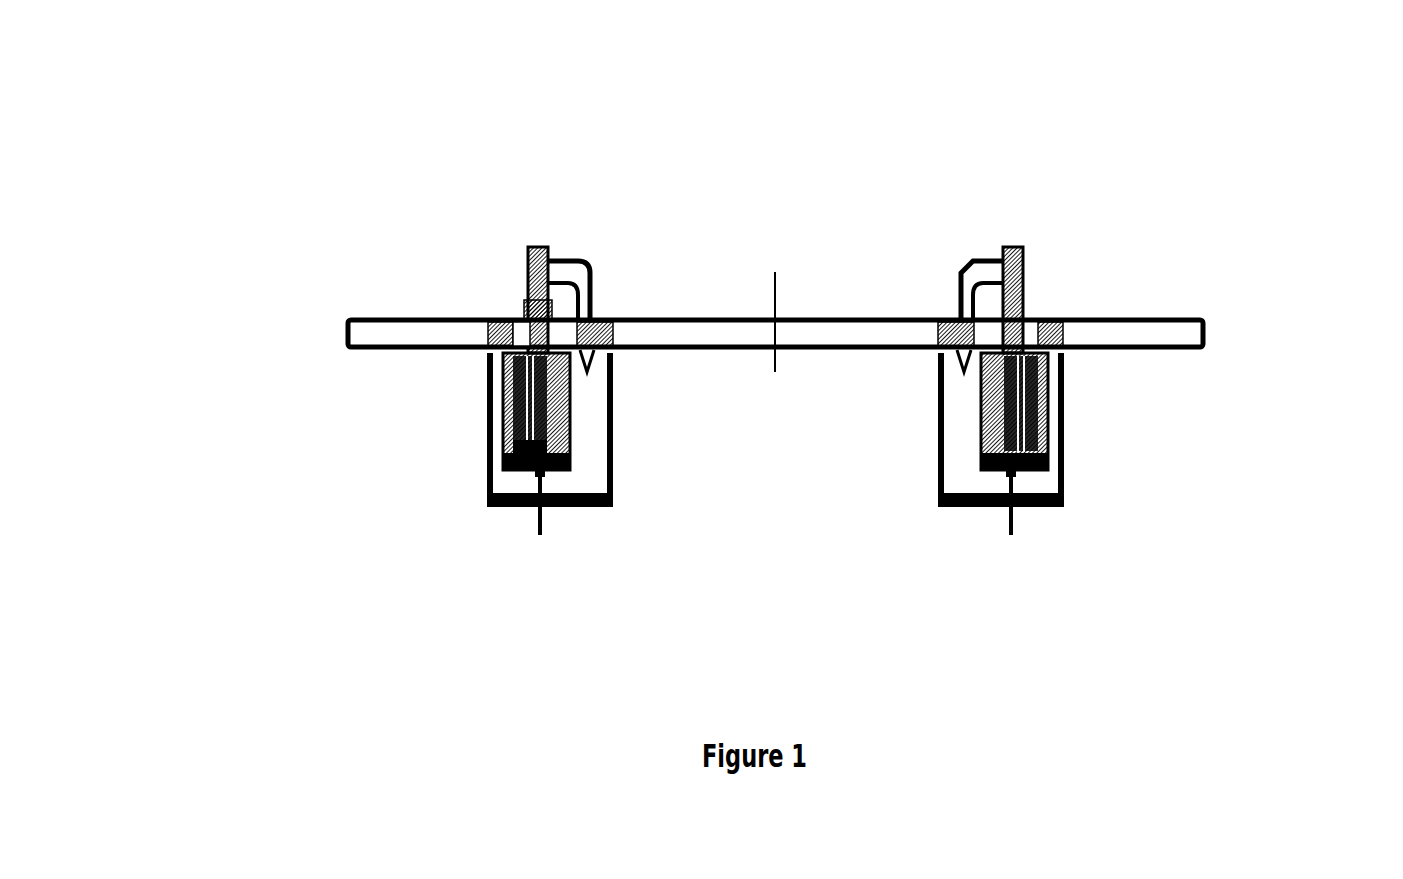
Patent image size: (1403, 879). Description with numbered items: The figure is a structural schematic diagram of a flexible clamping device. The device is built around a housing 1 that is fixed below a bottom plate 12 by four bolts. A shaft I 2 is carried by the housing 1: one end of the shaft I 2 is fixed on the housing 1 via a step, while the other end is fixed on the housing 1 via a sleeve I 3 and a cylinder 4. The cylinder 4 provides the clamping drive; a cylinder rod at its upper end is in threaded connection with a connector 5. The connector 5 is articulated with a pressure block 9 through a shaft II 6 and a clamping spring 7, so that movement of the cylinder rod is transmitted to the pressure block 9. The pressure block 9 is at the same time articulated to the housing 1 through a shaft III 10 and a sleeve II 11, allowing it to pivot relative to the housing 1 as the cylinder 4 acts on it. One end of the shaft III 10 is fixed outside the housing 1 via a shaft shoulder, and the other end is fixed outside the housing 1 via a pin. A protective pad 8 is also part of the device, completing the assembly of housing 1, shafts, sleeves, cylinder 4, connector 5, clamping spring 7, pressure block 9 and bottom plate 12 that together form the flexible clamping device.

The housing 1 is at (381, 414).
The shaft I 2 is at (347, 388).
The sleeve I 3 is at (348, 303).
The cylinder 4 is at (360, 255).
The connector 5 is at (398, 193).
The shaft II 6 is at (463, 180).
The clamping spring 7 is at (502, 196).
The protective pad 8 is at (569, 206).
The pressure block 9 is at (1104, 180).
The shaft III 10 is at (1190, 198).
The sleeve II 11 is at (1157, 353).
The bottom plate 12 is at (862, 363).